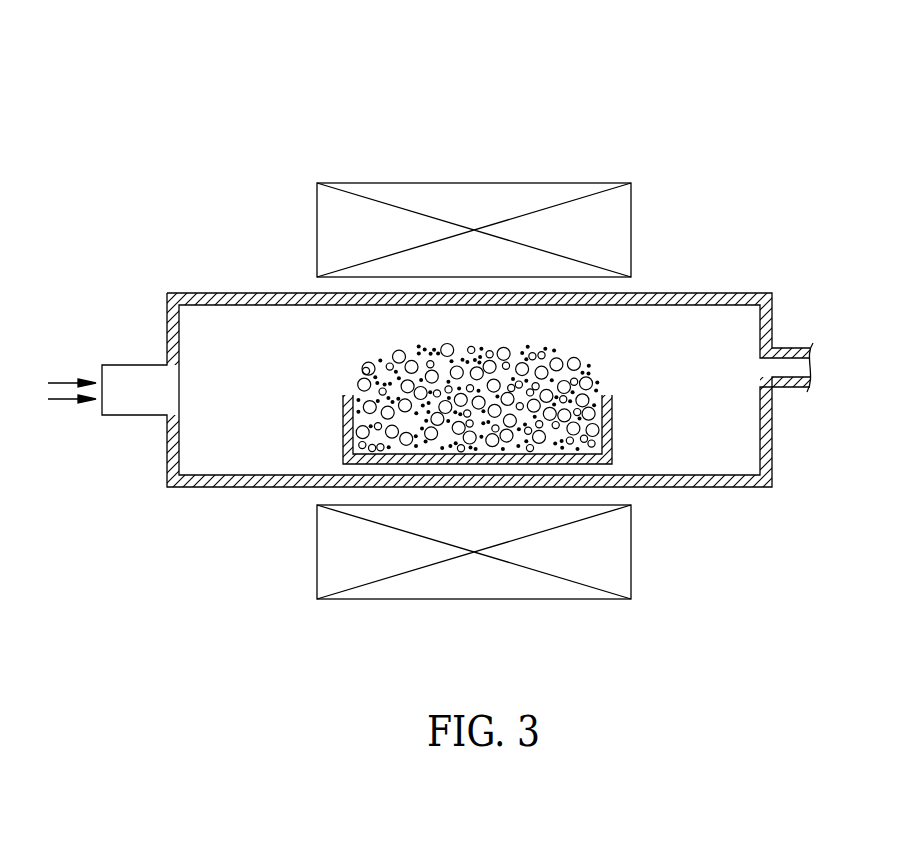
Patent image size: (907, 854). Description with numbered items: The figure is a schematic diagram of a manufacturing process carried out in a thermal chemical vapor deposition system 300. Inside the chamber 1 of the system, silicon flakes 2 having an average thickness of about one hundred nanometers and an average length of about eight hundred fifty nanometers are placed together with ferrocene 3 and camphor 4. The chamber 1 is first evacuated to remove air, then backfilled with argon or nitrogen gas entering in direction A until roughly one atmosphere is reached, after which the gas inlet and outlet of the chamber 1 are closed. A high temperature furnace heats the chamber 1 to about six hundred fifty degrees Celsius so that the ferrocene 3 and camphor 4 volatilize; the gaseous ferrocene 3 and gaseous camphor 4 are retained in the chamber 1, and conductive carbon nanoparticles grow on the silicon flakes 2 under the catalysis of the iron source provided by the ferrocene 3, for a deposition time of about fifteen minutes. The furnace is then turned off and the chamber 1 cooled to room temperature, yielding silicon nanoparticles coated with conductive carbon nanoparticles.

The thermal chemical vapor deposition system 300 is at (847, 157).
The chamber 1 is at (704, 486).
The silicon flakes 2 is at (345, 440).
The ferrocene 3 is at (356, 410).
The camphor 4 is at (362, 371).